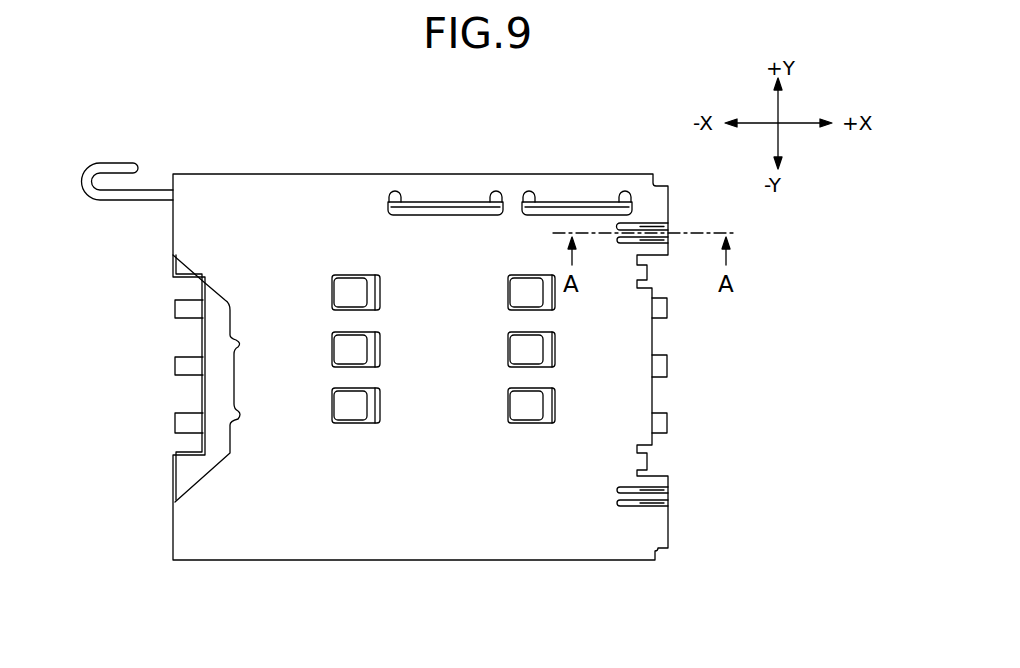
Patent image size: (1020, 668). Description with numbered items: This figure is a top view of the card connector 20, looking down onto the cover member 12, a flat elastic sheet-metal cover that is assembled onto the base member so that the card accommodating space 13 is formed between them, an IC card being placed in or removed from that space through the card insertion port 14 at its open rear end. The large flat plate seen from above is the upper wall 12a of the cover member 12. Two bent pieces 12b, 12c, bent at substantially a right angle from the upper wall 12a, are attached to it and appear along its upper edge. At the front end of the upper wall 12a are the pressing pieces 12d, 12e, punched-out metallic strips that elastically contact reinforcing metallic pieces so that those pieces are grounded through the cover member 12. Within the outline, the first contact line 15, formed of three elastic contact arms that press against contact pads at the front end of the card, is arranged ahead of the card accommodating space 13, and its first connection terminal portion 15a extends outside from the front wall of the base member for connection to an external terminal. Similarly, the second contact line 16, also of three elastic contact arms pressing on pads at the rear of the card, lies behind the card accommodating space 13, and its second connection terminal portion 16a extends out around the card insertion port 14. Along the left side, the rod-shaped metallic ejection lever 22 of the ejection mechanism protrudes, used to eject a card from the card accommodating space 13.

The cover member 12 is at (322, 168).
The upper wall 12a is at (268, 188).
The bent piece 12b is at (437, 192).
The bent piece 12c is at (557, 192).
The pressing piece 12d is at (660, 222).
The pressing piece 12e is at (665, 494).
The card accommodating space 13 is at (227, 394).
The card insertion port 14 is at (200, 341).
The first contact line 15 is at (533, 413).
The first connection terminal portion 15a is at (663, 308).
The second contact line 16 is at (357, 413).
The second connection terminal portion 16a is at (177, 305).
The card connector 20 is at (226, 573).
The ejection lever 22 is at (107, 205).